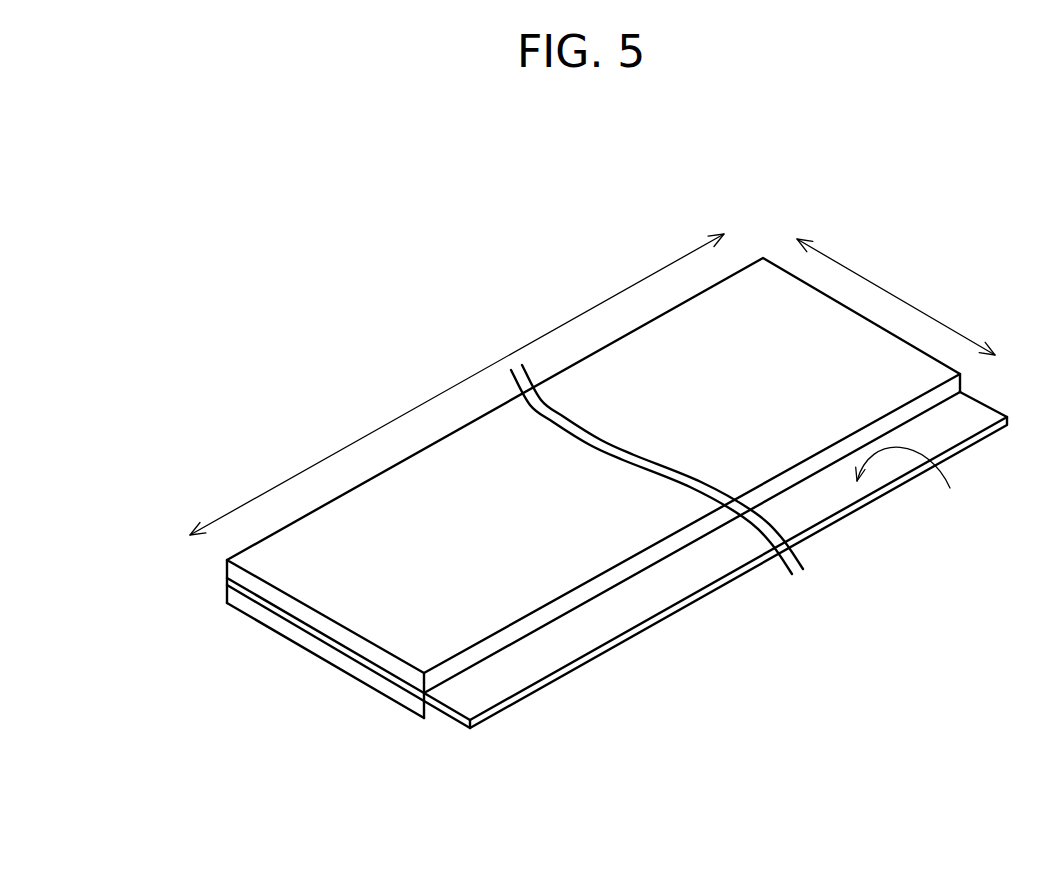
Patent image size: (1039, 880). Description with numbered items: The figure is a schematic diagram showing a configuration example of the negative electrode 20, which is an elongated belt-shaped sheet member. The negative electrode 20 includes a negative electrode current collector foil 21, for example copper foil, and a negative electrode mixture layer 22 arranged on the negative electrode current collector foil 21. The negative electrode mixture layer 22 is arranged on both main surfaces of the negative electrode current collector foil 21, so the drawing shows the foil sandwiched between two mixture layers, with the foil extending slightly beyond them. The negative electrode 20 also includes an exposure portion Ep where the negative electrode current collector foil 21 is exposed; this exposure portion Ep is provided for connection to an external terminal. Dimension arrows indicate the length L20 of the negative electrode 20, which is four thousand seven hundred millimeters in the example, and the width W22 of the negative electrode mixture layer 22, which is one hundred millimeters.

The negative electrode 20 is at (363, 788).
The negative electrode current collector foil 21 is at (446, 718).
The negative electrode mixture layer 22 is at (322, 622).
The length of negative electrode L20 is at (457, 384).
The width of negative electrode mixture layer W22 is at (896, 297).
The exposure portion Ep is at (919, 485).